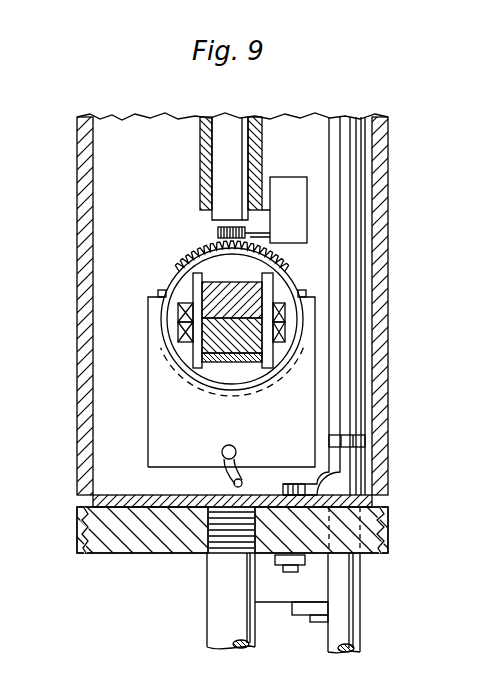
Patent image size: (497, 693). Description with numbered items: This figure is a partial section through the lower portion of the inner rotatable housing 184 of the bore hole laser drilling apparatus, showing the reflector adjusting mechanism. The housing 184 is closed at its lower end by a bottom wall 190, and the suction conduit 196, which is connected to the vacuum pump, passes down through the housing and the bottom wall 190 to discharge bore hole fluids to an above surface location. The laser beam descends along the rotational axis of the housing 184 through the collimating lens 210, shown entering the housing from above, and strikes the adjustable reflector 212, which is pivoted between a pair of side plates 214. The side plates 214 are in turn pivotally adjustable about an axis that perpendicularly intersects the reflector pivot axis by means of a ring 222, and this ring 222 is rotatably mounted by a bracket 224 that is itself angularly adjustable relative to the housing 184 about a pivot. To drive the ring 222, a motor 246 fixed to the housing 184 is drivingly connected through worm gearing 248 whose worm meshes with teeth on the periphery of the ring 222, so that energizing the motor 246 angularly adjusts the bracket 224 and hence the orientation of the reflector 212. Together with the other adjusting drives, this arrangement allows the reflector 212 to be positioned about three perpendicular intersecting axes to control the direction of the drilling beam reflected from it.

The inner rotatable housing 184 is at (77, 333).
The bottom wall 190 is at (150, 525).
The suction conduit 196 is at (348, 604).
The collimating lens 210 is at (218, 165).
The adjustable reflector 212 is at (237, 305).
The side plates 214 is at (193, 357).
The ring 222 is at (176, 290).
The bracket 224 is at (162, 381).
The motor 246 is at (293, 183).
The worm gearing 248 is at (218, 232).